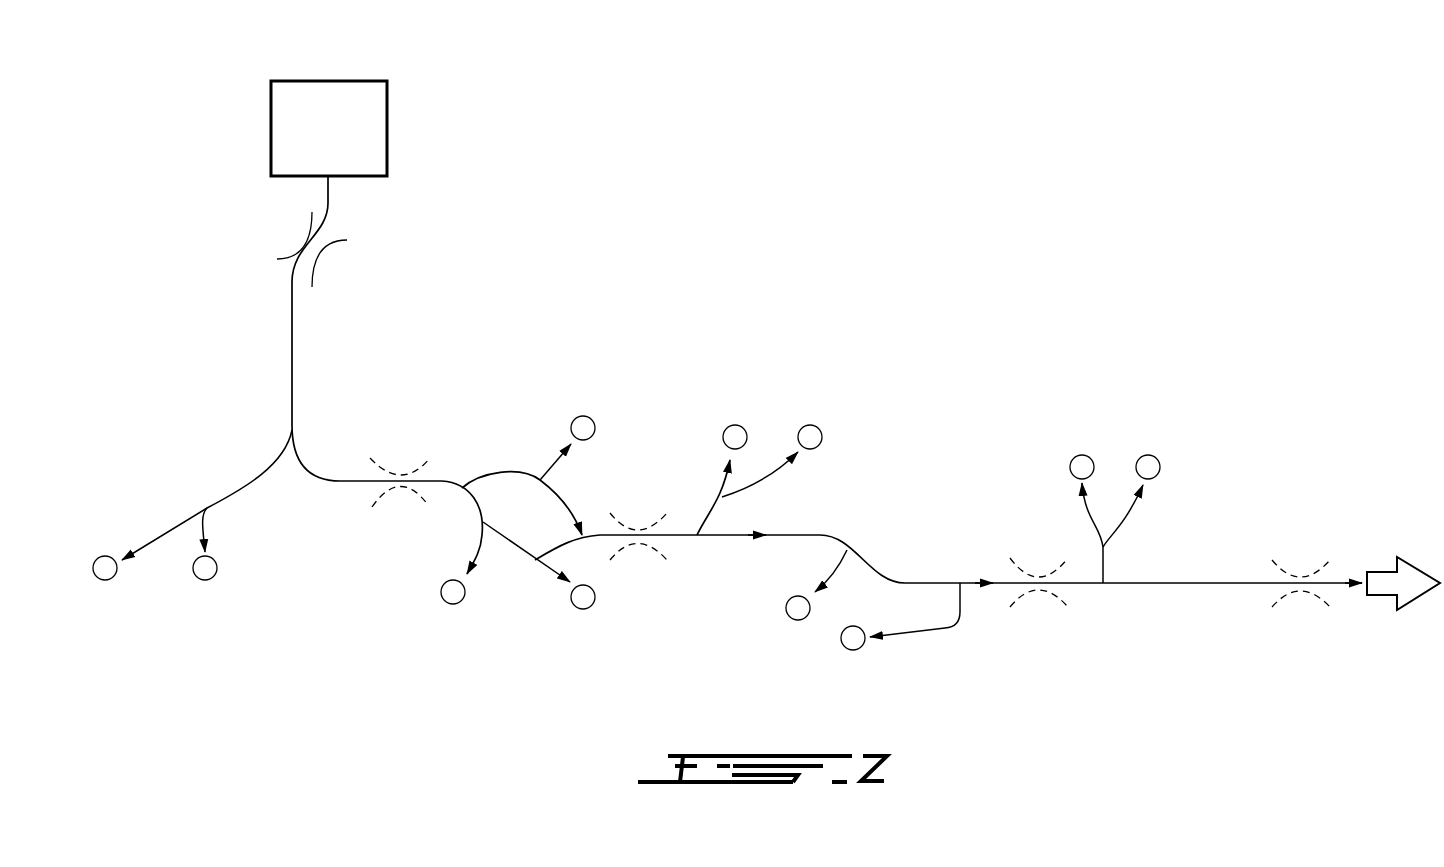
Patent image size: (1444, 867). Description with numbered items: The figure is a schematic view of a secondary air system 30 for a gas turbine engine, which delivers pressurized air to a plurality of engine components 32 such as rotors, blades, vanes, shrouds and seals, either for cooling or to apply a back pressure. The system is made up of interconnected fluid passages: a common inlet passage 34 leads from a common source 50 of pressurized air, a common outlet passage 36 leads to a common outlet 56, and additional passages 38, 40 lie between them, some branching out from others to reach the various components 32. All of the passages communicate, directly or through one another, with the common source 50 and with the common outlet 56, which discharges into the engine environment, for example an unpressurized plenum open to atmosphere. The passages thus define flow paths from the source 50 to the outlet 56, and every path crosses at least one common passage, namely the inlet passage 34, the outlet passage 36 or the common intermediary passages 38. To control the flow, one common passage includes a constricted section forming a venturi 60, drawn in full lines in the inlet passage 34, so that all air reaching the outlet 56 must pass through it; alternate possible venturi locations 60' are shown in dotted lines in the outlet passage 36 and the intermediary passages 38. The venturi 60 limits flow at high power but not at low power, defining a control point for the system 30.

The secondary air system 30 is at (656, 214).
The common source of pressurized air 50 is at (365, 125).
The venturi 60 is at (359, 249).
The common inlet passage 34 is at (292, 347).
The common intermediary passages 38 is at (442, 481).
The additional passages 40 is at (480, 550).
The gas turbine engine components 32 is at (455, 588).
The common outlet passage 36 is at (1237, 583).
The common outlet 56 is at (1417, 558).
The alternate venturi locations 60' is at (850, 487).